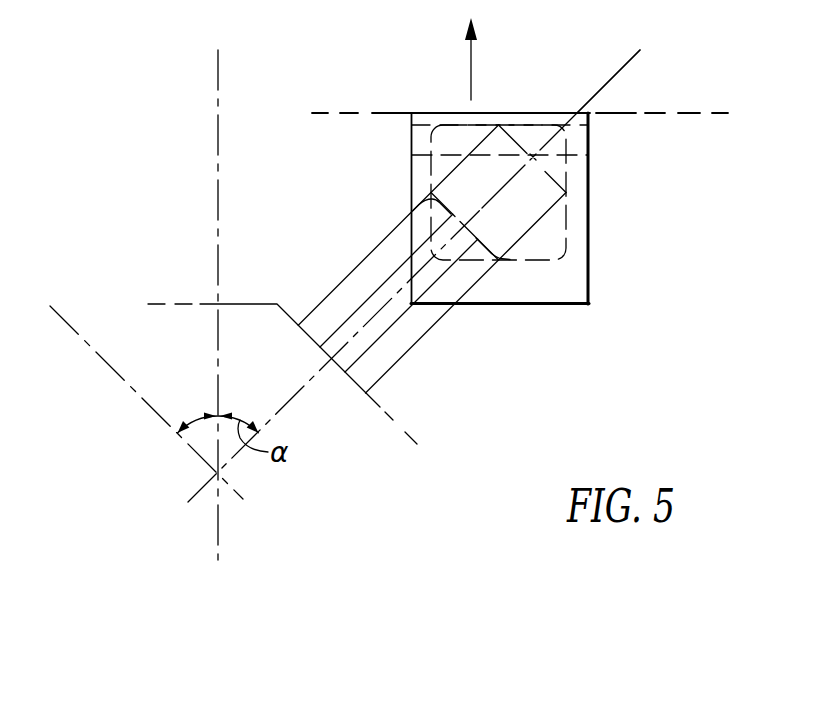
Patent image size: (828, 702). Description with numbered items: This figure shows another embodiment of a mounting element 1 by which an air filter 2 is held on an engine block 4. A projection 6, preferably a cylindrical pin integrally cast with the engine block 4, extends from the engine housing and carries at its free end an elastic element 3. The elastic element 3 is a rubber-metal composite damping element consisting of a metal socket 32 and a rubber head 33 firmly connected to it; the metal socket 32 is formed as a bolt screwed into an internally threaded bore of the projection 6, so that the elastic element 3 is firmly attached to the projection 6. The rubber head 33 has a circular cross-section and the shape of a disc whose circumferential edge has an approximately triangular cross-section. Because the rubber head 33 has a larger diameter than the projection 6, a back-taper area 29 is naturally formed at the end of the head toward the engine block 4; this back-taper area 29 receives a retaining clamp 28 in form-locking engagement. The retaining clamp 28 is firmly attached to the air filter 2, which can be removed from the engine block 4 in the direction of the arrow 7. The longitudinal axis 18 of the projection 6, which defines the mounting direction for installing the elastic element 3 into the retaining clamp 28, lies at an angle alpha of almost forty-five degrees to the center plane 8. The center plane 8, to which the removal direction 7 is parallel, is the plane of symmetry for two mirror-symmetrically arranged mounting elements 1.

The mounting element 1 is at (459, 414).
The air filter 2 is at (684, 112).
The elastic element 3 is at (548, 192).
The engine block 4 is at (246, 305).
The projection 6 is at (378, 358).
The arrow (direction of removal) 7 is at (466, 56).
The center plane 8 is at (221, 122).
The longitudinal axis 18 is at (594, 103).
The retaining clamp 28 is at (558, 296).
The back-taper area 29 is at (511, 278).
The metal socket 32 is at (361, 313).
The rubber head 33 is at (424, 185).